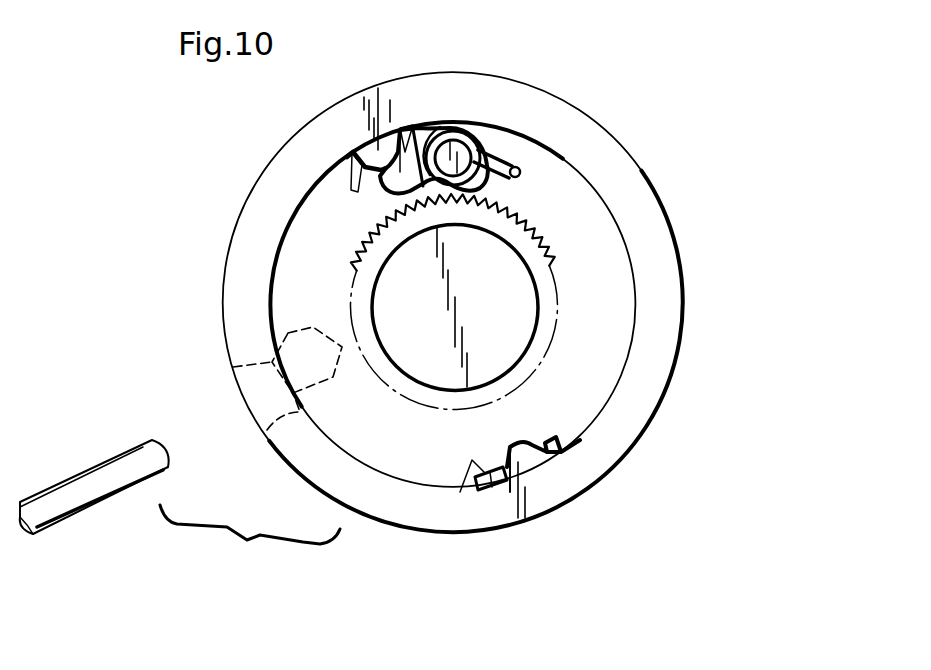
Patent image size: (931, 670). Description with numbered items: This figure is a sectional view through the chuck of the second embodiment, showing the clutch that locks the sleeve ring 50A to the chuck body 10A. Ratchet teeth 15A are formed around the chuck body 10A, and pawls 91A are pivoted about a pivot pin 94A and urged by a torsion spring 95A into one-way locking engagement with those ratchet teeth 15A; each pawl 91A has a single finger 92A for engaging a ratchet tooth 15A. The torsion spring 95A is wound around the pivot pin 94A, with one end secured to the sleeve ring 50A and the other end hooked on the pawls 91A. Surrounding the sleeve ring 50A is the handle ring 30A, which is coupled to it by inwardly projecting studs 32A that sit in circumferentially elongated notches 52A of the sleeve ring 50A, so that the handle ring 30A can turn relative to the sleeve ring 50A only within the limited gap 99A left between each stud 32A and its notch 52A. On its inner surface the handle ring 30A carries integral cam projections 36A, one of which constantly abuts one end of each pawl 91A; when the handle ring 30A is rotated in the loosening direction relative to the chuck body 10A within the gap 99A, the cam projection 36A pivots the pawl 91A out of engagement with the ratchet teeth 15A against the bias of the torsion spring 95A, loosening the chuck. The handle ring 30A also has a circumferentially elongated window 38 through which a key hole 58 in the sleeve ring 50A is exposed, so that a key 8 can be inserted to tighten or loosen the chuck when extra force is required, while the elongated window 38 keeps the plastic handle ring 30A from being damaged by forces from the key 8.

The key 8 is at (120, 487).
The chuck body 10A is at (537, 342).
The ratchet teeth 15A is at (528, 218).
The handle ring 30A is at (665, 248).
The studs 32A is at (352, 152).
The cam projections 36A is at (384, 150).
The window 38 is at (250, 383).
The sleeve ring 50A is at (612, 318).
The notches 52A is at (352, 190).
The key hole 58 is at (313, 327).
The pawls 91A is at (445, 128).
The pawl 92A is at (482, 188).
The pivot pin 94A is at (458, 148).
The torsion spring 95A is at (502, 152).
The spring retainer 99A is at (415, 118).